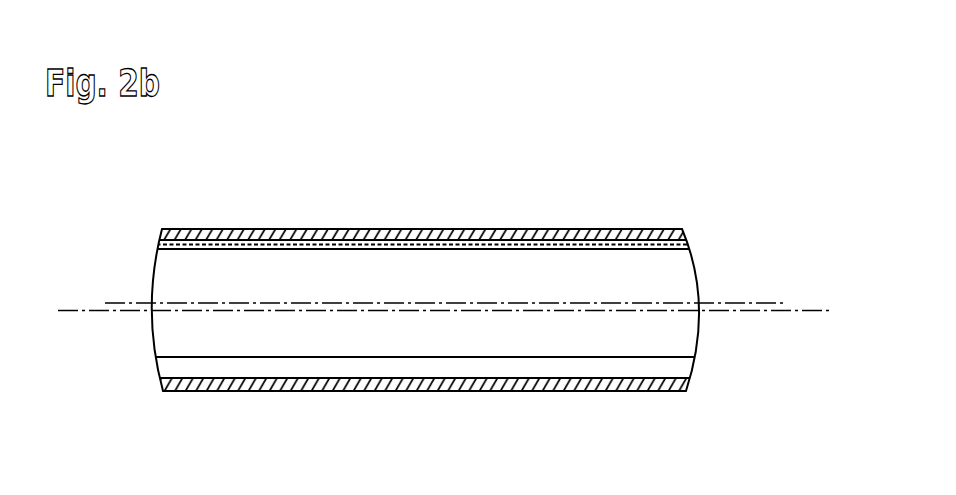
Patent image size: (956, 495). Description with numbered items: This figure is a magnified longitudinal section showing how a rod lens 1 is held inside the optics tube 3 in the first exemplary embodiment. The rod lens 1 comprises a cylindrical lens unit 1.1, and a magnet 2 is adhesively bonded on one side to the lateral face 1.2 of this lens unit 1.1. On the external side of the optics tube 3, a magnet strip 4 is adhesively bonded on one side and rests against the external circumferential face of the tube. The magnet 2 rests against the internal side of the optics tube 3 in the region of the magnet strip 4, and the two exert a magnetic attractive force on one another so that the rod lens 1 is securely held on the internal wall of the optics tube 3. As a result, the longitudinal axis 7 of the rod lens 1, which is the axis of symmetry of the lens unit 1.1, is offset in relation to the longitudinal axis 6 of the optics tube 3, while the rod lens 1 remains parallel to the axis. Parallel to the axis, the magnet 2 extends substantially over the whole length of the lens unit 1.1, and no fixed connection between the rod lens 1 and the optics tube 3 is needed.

The rod lens 1 is at (466, 370).
The cylindrical lens unit 1.1 is at (403, 340).
The lateral face 1.2 is at (603, 358).
The magnet 2 is at (522, 248).
The optics tube 3 is at (406, 241).
The magnet strip 4 is at (272, 229).
The longitudinal axis of the optics tube 6 is at (71, 311).
The longitudinal axis of the rod lens 7 is at (120, 303).